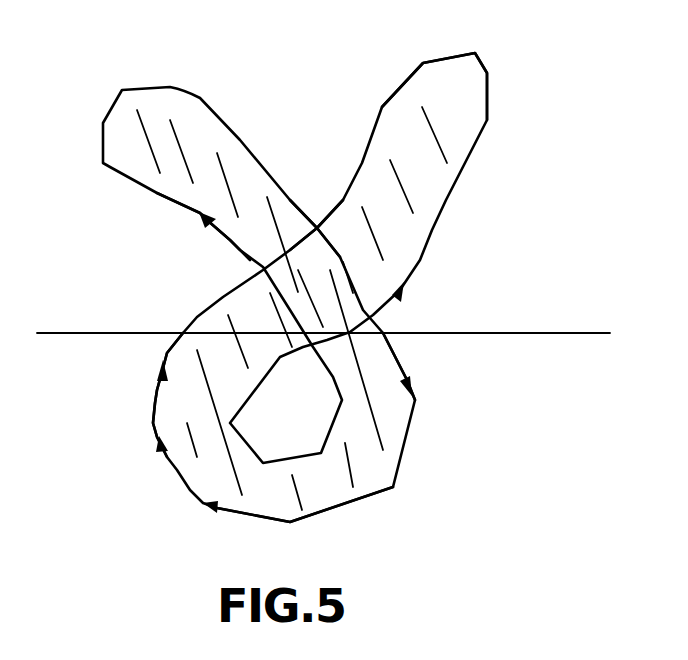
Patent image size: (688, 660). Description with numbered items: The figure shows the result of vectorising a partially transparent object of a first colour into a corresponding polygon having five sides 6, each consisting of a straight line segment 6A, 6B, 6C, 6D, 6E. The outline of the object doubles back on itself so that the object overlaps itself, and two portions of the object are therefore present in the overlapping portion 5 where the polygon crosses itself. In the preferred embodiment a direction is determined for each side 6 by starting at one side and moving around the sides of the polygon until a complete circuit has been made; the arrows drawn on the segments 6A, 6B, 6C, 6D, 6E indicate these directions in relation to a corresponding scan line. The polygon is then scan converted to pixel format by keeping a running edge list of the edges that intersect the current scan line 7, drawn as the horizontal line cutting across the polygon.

The overlapping portion 5 is at (313, 267).
The sides 6 is at (212, 452).
The straight line segment 6A is at (153, 403).
The straight line segment 6B is at (430, 61).
The straight line segment 6C is at (240, 252).
The straight line segment 6D is at (393, 353).
The straight line segment 6E is at (353, 500).
The scan line 7 is at (578, 333).